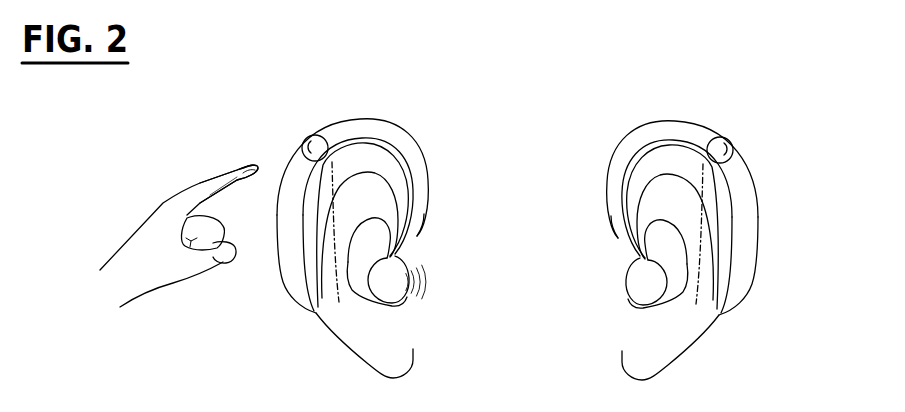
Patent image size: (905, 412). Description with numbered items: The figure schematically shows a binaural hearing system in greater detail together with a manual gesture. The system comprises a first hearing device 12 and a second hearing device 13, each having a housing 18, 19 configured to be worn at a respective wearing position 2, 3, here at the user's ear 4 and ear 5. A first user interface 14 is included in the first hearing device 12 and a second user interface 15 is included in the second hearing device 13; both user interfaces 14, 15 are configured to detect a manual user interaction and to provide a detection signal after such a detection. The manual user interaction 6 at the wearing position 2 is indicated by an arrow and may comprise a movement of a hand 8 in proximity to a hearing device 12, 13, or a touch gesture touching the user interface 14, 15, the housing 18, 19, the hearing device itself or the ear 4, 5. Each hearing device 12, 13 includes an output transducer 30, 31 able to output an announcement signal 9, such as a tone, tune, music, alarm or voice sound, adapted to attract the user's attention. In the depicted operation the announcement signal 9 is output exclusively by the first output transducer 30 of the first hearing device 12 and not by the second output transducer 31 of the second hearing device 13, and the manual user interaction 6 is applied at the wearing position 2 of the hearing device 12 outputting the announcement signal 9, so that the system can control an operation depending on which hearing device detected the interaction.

The wearing position 2 is at (351, 199).
The wearing position 3 is at (692, 198).
The ear 4 is at (367, 343).
The ear 5 is at (670, 343).
The manual user interaction 6 is at (227, 177).
The hand 8 is at (167, 275).
The announcement signal 9 is at (432, 280).
The first hearing device 12 is at (293, 157).
The second hearing device 13 is at (737, 158).
The first user interface 14 is at (305, 140).
The second user interface 15 is at (725, 145).
The housing 18 is at (290, 268).
The housing 19 is at (740, 262).
The output transducer 30 is at (403, 300).
The output transducer 31 is at (638, 290).